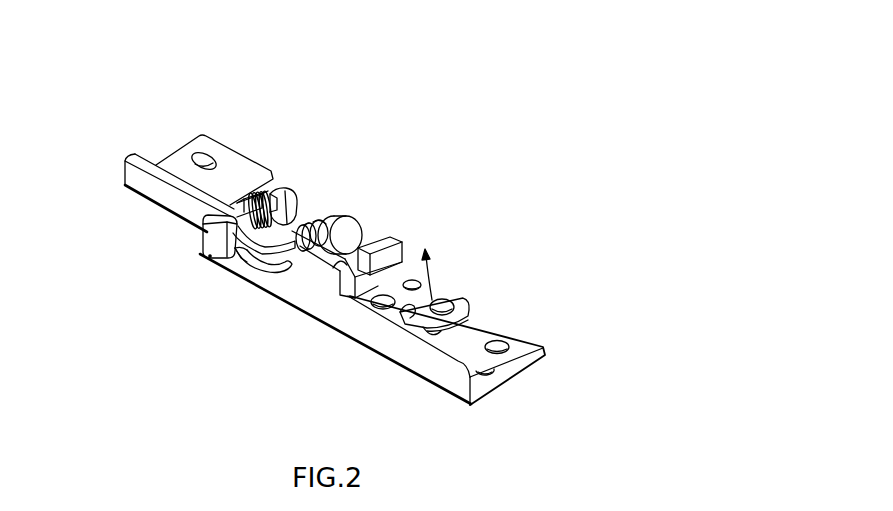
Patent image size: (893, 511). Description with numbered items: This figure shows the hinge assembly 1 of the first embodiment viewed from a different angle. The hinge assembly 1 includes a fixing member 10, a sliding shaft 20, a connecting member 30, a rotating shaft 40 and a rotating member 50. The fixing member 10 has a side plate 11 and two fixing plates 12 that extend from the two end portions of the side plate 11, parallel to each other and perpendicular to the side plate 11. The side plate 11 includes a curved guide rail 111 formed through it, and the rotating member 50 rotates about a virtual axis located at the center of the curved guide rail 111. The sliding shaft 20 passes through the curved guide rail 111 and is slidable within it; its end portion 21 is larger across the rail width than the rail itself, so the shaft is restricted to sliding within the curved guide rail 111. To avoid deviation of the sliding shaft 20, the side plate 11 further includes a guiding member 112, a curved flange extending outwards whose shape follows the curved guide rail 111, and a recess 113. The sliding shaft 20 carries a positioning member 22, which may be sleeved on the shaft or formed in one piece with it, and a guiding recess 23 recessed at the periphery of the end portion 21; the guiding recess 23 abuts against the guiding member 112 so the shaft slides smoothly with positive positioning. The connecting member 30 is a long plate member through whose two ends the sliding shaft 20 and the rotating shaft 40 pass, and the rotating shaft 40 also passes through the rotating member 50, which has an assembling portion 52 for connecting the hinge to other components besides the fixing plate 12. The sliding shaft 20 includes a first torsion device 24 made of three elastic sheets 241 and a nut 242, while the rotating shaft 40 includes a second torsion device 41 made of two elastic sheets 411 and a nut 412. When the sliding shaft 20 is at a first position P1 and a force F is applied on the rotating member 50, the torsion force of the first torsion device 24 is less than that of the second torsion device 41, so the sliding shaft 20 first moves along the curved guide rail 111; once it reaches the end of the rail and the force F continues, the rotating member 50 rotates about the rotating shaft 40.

The hinge assembly 1 is at (108, 97).
The fixing member 10 is at (95, 251).
The side plate 11 is at (133, 182).
The curved guide rail 111 is at (278, 274).
The guiding member 112 is at (250, 254).
The recess 113 is at (243, 262).
The fixing plate 12 is at (180, 172).
The sliding shaft 20 is at (302, 232).
The end portion 21 is at (200, 228).
The positioning member 22 is at (243, 200).
The guiding recess 23 is at (225, 250).
The first torsion device 24 is at (300, 133).
The elastic sheet 241 is at (258, 196).
The nut 242 is at (285, 188).
The connecting member 30 is at (312, 238).
The rotating shaft 40 is at (313, 298).
The second torsion device 41 is at (400, 190).
The elastic sheet 411 is at (345, 217).
The nut 412 is at (366, 237).
The rotating member 50 is at (396, 255).
The assembling portion 52 is at (466, 303).
The first position P1 is at (210, 257).
The force F is at (424, 266).